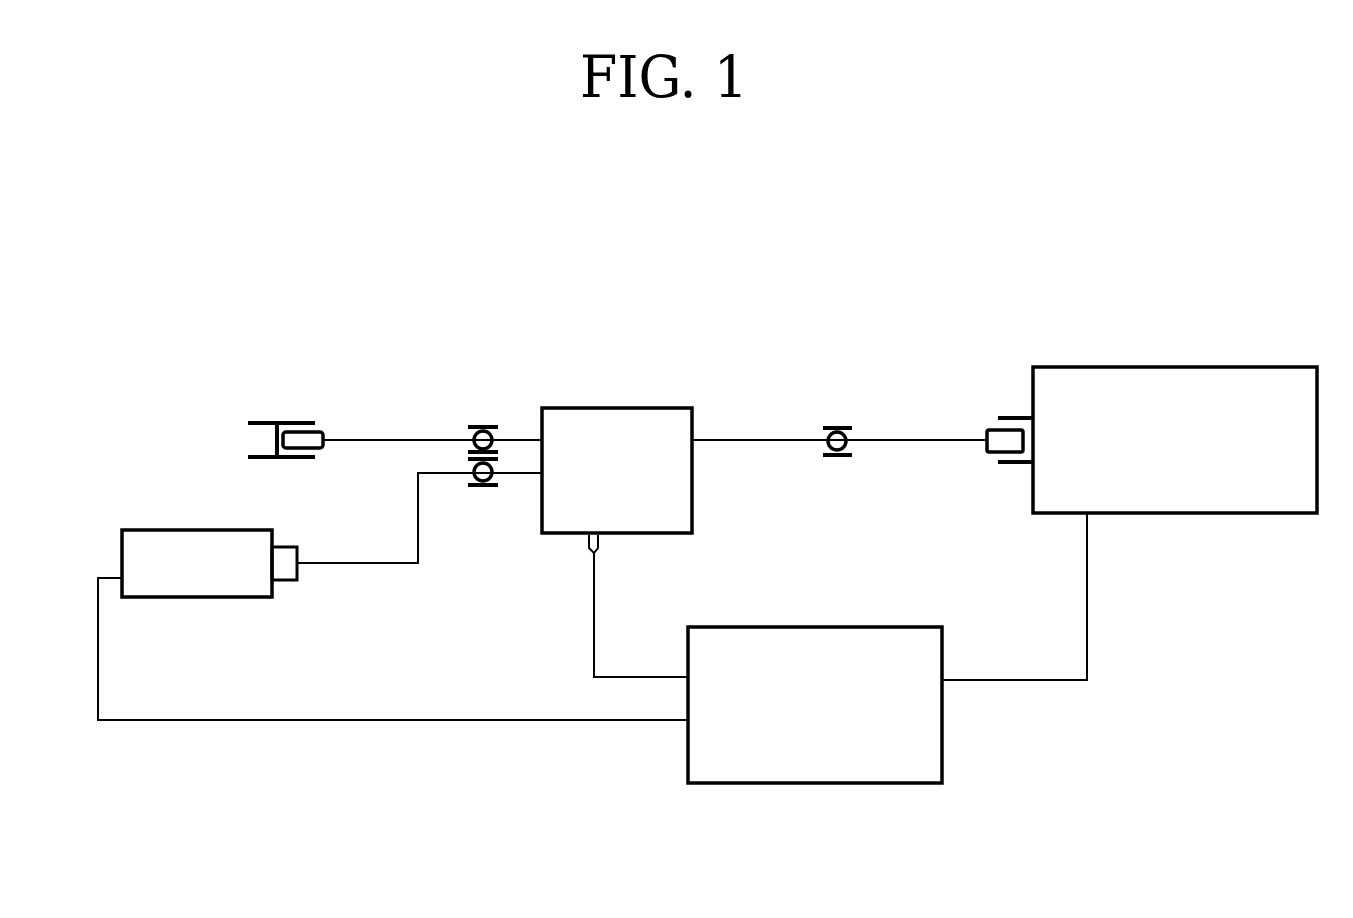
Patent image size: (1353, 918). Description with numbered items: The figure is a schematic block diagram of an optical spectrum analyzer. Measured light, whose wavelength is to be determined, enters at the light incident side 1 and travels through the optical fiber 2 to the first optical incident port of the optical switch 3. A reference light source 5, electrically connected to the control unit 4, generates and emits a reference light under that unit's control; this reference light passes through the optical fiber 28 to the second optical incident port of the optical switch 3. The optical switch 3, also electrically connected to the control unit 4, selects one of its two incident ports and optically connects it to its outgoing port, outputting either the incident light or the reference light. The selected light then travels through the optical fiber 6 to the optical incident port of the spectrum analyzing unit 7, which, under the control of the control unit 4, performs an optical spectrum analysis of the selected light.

The light incident side 1 is at (272, 423).
The optical fiber 2 is at (418, 440).
The optical switch 3 is at (597, 410).
The control unit 4 is at (787, 783).
The reference light source 5 is at (220, 598).
The optical fiber 6 is at (913, 440).
The spectrum analyzing unit 7 is at (1057, 367).
The optical fiber 28 is at (420, 545).